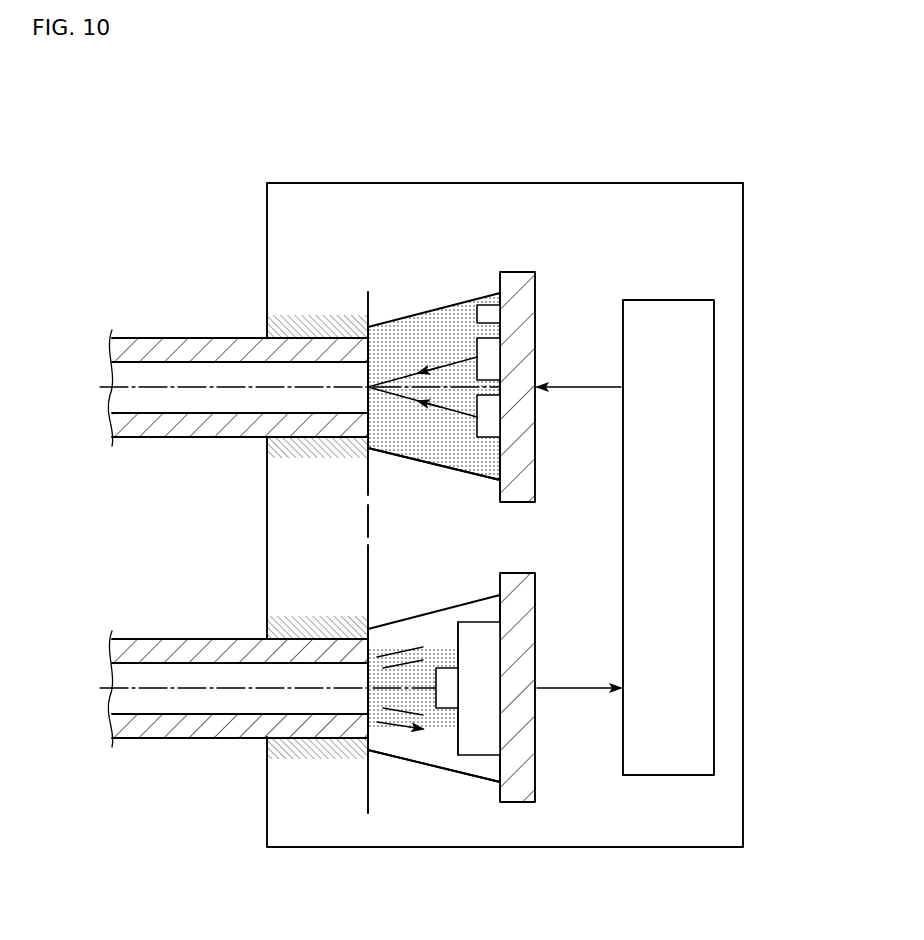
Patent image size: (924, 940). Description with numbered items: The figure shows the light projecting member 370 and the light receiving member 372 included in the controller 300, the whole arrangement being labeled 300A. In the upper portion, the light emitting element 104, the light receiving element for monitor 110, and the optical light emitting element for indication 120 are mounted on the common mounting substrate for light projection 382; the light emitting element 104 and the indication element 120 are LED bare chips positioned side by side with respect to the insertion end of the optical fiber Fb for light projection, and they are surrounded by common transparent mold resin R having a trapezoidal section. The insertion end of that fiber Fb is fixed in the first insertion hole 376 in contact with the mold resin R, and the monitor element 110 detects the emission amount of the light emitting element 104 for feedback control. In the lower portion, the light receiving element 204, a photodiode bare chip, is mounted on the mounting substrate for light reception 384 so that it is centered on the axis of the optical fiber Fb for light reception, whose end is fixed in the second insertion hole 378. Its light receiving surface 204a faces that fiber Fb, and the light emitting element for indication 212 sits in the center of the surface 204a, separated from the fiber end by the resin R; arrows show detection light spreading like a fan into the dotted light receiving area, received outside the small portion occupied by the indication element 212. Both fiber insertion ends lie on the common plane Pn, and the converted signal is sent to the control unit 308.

The optical module 300A is at (257, 125).
The controller 300 is at (613, 183).
The common plane Pn is at (367, 800).
The optical fiber Fb is at (163, 337).
The first insertion hole 376 is at (327, 423).
The second insertion hole 378 is at (307, 725).
The light projecting member 370 is at (428, 307).
The transparent mold resin R is at (447, 460).
The mounting substrate for light projection 382 is at (522, 488).
The light receiving element for monitor 110 is at (488, 313).
The light emitting element 104 is at (490, 355).
The optical light emitting element for indication 120 is at (490, 430).
The light receiving member 372 is at (407, 762).
The mounting substrate for light reception 384 is at (525, 602).
The light receiving element 204 is at (488, 712).
The light receiving surface 204a is at (450, 637).
The light emitting element for indication 212 is at (448, 674).
The control unit 308 is at (700, 458).